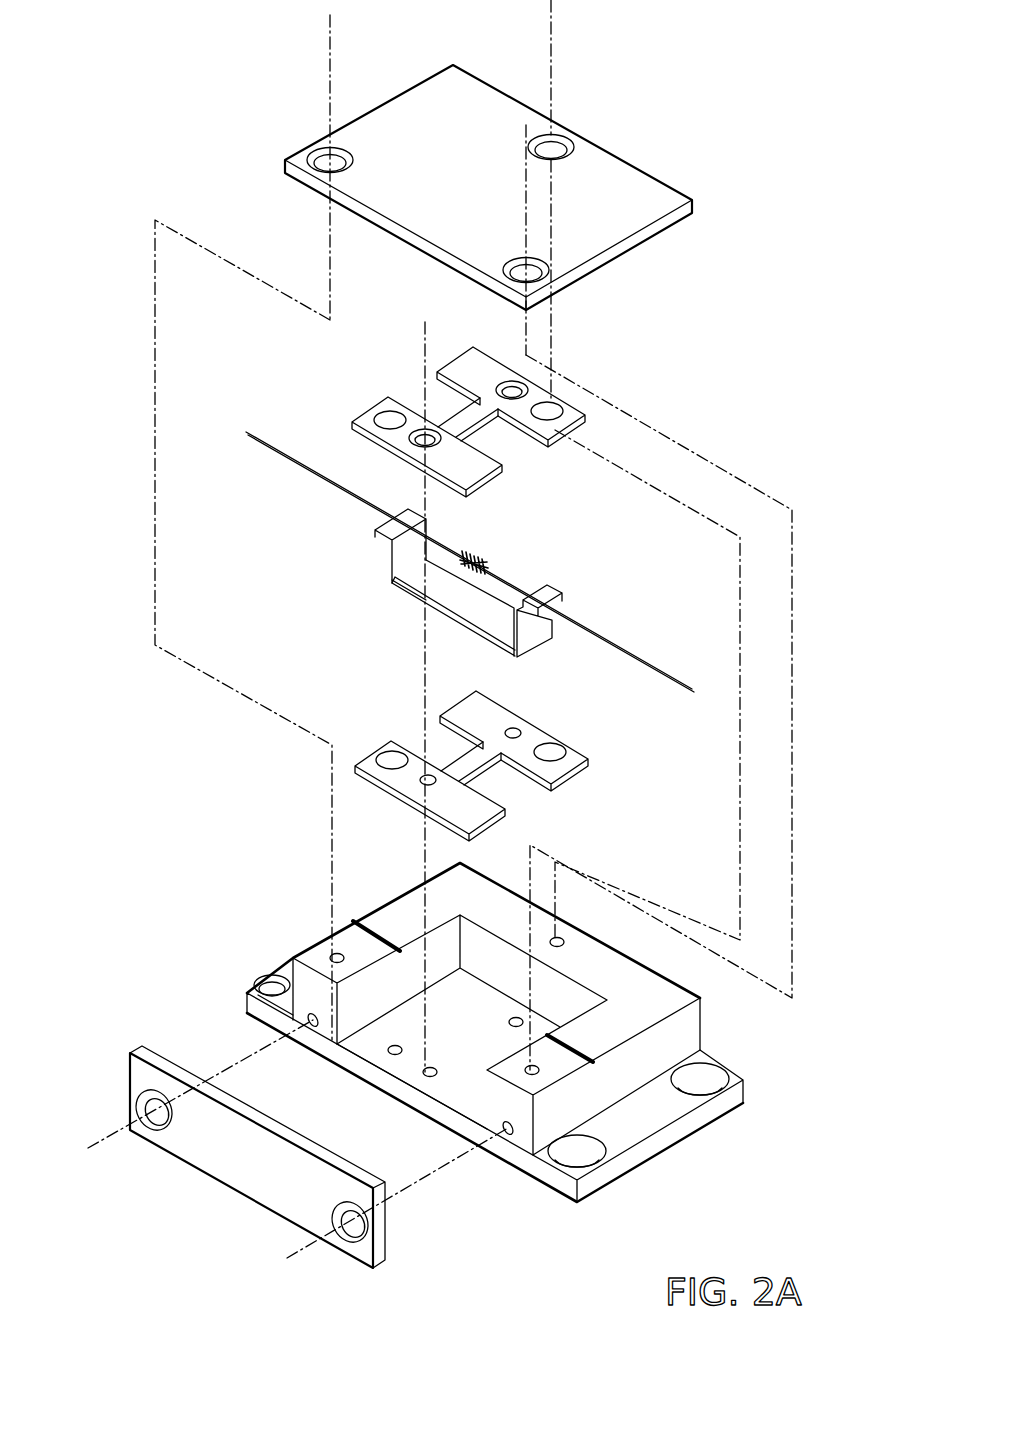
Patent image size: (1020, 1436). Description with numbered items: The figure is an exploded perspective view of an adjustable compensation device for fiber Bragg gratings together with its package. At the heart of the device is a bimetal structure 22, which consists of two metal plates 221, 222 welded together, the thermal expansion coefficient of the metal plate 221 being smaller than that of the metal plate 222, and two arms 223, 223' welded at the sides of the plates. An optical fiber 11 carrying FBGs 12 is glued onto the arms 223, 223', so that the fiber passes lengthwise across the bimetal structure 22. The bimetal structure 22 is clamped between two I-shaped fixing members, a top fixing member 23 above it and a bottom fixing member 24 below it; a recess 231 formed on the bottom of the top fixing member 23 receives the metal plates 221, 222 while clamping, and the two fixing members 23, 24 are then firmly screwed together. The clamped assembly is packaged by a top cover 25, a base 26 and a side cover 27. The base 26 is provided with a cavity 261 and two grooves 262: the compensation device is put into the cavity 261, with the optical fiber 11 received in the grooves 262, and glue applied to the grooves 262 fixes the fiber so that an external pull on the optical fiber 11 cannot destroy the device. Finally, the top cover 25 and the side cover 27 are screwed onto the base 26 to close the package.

The optical fiber 11 is at (270, 430).
The FBGs 12 is at (477, 558).
The bimetal structure 22 is at (408, 588).
The metal plate 221 is at (417, 577).
The metal plate 222 is at (450, 615).
The arm 223 is at (355, 546).
The arm 223' is at (457, 624).
The top fixing member 23 is at (496, 440).
The recess 231 is at (510, 443).
The bottom fixing member 24 is at (508, 787).
The top cover 25 is at (619, 158).
The base 26 is at (522, 1010).
The cavity 261 is at (470, 1077).
The grooves 262 is at (373, 930).
The side cover 27 is at (258, 1203).